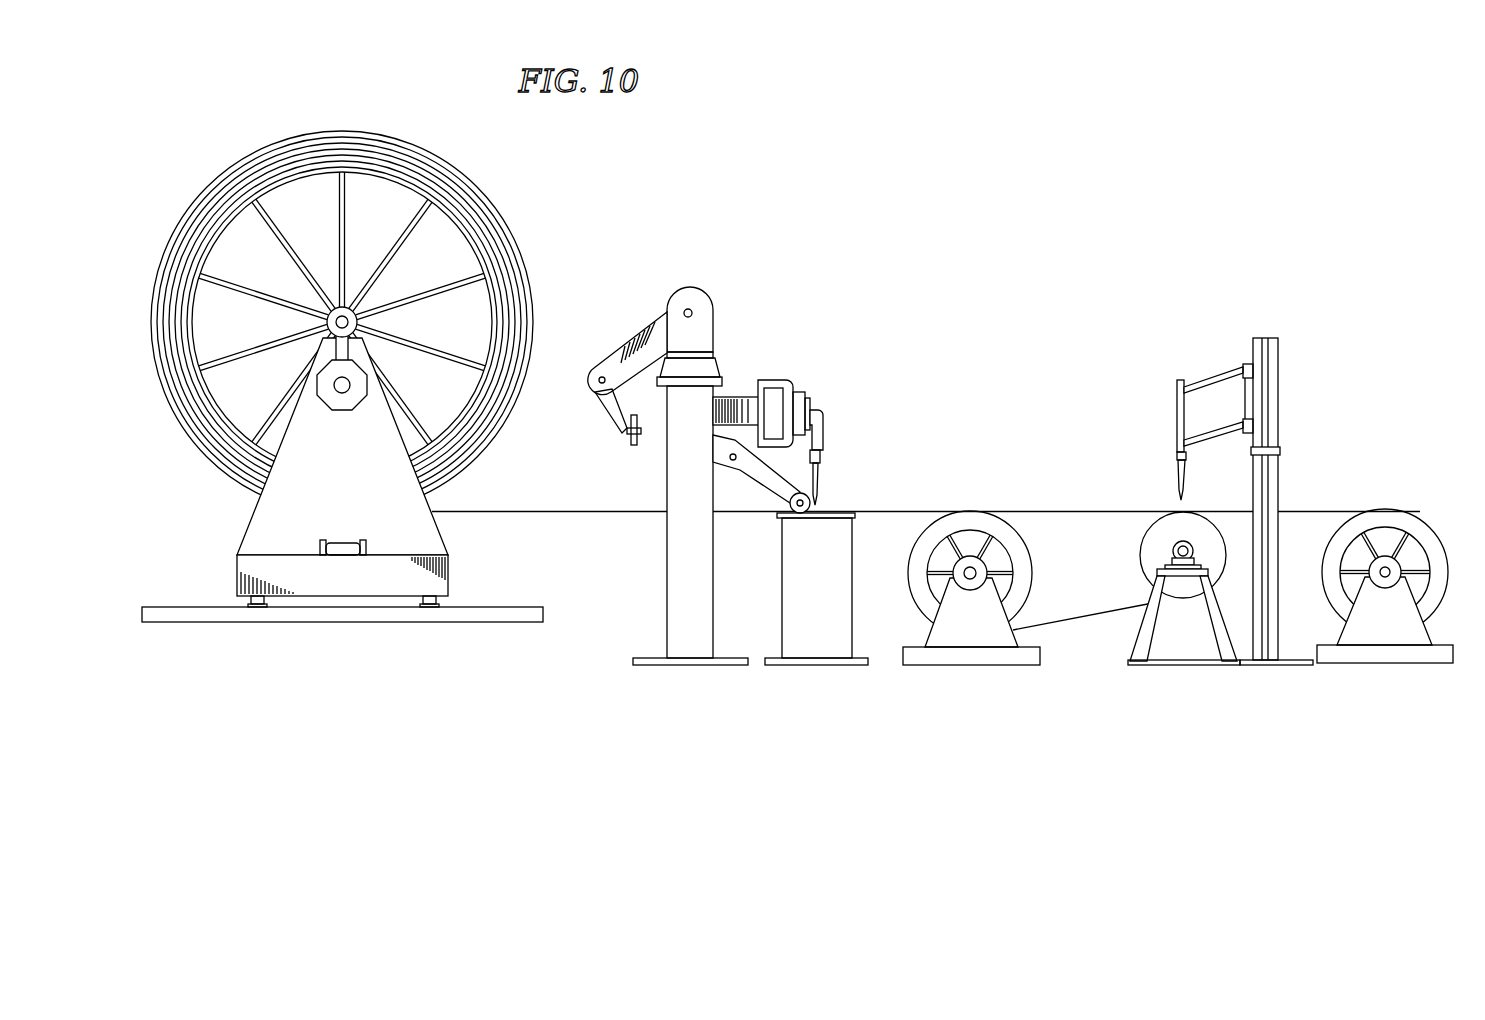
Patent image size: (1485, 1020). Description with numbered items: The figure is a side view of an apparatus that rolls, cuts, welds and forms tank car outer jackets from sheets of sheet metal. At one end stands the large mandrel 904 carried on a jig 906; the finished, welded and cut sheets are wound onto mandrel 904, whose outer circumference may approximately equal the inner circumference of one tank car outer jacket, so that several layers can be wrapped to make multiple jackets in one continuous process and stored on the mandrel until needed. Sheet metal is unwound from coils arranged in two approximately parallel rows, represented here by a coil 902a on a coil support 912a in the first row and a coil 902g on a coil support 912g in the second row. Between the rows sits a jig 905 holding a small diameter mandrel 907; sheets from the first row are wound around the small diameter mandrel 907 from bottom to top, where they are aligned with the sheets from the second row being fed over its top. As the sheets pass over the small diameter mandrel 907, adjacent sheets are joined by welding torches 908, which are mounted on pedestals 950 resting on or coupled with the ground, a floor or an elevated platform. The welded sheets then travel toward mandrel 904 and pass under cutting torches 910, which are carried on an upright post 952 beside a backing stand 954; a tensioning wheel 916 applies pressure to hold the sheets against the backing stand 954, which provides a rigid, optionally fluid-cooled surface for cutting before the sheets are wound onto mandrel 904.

The mandrel 904 is at (282, 142).
The jig 906 is at (237, 578).
The cutting torches 910 is at (643, 328).
The tensioning wheel 916 is at (752, 472).
The post 952 is at (653, 666).
The backing stand 954 is at (797, 666).
The coil 902a is at (1033, 558).
The coil support 912a is at (948, 666).
The small diameter mandrel 907 is at (1140, 563).
The jig 905 is at (1130, 645).
The welding torches 908 is at (1176, 420).
The pedestals 950 is at (1295, 666).
The coil 902g is at (1420, 525).
The coil support 912g is at (1400, 665).